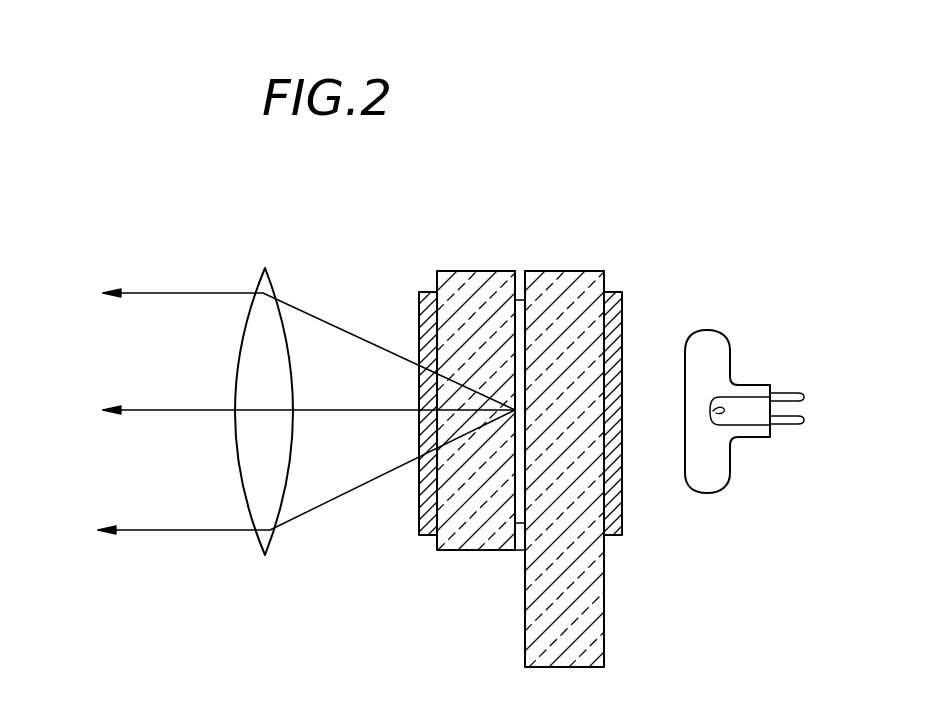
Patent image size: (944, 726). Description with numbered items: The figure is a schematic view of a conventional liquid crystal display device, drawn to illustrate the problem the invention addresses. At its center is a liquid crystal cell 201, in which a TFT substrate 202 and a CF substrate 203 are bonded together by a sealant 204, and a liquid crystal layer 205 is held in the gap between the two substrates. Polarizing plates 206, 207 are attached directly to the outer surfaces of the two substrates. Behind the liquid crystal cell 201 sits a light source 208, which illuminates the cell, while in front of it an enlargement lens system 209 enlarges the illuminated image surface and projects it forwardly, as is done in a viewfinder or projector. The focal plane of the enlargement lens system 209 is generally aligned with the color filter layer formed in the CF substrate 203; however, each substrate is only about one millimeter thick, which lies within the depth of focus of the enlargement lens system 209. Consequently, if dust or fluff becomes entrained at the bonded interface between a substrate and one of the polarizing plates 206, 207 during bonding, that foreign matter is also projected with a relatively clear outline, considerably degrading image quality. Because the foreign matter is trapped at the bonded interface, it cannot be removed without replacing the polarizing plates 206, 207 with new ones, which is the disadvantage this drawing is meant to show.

The liquid crystal cell 201 is at (462, 268).
The TFT substrate 202 is at (604, 618).
The CF substrate 203 is at (453, 551).
The sealant 204 is at (520, 551).
The liquid crystal layer 205 is at (522, 330).
The polarizing plate 206 is at (623, 514).
The polarizing plate 207 is at (419, 522).
The light source 208 is at (730, 352).
The enlargement lens system 209 is at (262, 553).